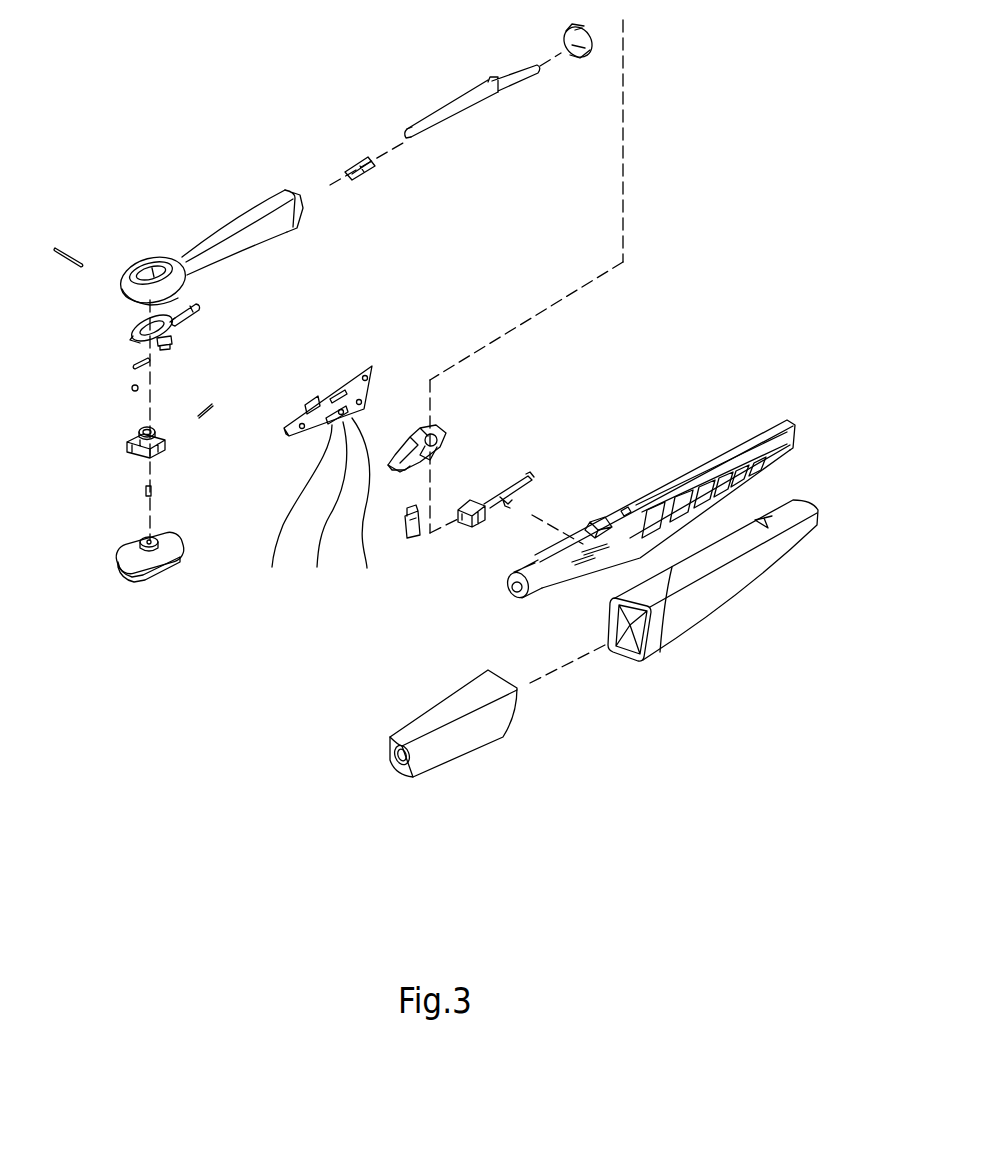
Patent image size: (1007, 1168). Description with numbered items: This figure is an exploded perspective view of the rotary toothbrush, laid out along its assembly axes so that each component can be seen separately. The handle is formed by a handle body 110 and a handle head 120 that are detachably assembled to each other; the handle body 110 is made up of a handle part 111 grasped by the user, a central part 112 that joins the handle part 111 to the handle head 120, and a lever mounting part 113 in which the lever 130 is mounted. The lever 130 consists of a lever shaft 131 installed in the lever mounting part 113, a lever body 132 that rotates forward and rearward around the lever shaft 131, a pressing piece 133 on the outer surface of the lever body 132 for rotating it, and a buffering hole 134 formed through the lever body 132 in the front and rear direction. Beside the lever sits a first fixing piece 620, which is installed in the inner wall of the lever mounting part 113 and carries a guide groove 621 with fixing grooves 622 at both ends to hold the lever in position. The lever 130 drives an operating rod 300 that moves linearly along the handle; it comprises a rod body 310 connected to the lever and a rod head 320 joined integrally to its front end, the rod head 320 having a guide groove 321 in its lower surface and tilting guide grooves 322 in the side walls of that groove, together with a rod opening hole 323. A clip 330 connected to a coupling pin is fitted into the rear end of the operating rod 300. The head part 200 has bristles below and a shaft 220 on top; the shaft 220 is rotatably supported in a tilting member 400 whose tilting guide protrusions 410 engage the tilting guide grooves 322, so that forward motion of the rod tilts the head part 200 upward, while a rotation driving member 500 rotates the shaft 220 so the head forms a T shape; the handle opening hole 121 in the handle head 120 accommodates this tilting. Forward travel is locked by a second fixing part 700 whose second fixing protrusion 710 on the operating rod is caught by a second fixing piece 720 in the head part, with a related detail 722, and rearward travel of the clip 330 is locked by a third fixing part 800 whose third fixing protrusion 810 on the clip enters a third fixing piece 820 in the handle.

The handle body 110 is at (698, 826).
The handle part 111 is at (683, 617).
The central part 112 is at (492, 730).
The lever mounting part 113 is at (578, 572).
The handle head 120 is at (226, 224).
The handle opening hole 121 is at (147, 267).
The lever 130 is at (510, 373).
The lever shaft 131 is at (422, 432).
The lever body 132 is at (438, 440).
The pressing piece 133 is at (418, 517).
The buffering hole 134 is at (412, 473).
The head part 200 is at (185, 542).
The shaft 220 is at (150, 550).
The operating rod 300 is at (393, 314).
The rod body 310 is at (465, 102).
The rod head 320 is at (173, 333).
The guide groove 321 is at (134, 341).
The tilting guide grooves 322 is at (163, 340).
The rod opening hole 323 is at (197, 305).
The clip 330 is at (480, 523).
The tilting member 400 is at (127, 452).
The tilting guide protrusions 410 is at (158, 442).
The rotation driving member 500 is at (137, 360).
The first fixing piece 620 is at (368, 592).
The guide groove 621 is at (325, 500).
The fixing grooves 622 is at (318, 506).
The second fixing part 700 is at (387, 92).
The second fixing protrusion 710 is at (402, 141).
The second fixing piece 720 is at (348, 162).
The sensor tip 722 is at (405, 140).
The third fixing part 800 is at (677, 380).
The third fixing protrusion 810 is at (526, 478).
The third fixing piece 820 is at (600, 520).